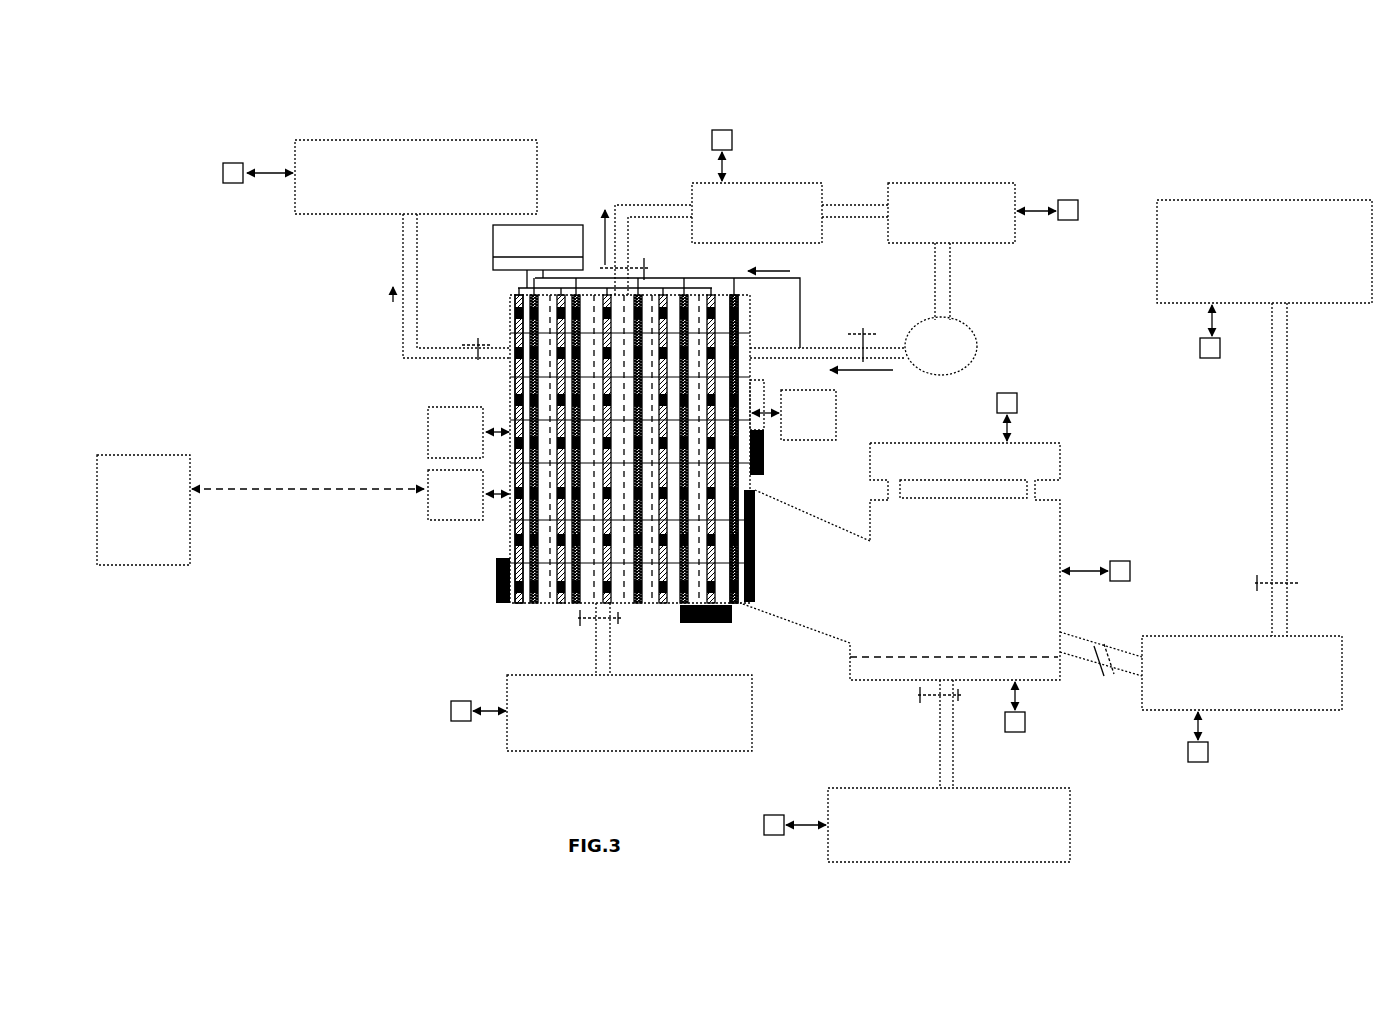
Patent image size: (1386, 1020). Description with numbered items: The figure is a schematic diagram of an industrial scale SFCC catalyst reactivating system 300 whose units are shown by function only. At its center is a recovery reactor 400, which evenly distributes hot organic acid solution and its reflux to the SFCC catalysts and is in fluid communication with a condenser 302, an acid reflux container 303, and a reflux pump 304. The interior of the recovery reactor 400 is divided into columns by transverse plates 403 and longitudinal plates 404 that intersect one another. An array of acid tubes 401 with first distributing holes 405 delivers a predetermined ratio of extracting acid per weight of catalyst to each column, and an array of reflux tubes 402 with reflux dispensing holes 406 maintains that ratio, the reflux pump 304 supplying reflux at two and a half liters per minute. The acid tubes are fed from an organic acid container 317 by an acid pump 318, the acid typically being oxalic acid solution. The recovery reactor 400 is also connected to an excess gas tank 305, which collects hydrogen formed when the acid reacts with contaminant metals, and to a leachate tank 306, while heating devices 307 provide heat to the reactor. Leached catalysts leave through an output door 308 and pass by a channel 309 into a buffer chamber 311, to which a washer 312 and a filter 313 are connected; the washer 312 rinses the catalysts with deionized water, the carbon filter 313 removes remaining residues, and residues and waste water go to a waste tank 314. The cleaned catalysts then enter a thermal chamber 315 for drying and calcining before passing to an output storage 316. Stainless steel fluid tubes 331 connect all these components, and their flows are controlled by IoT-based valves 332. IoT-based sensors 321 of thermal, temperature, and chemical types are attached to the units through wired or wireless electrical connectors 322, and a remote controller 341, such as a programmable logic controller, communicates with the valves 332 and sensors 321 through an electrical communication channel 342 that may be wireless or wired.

The SFCC catalyst reactivating system 300 is at (1030, 132).
The condenser 302 is at (800, 183).
The acid reflux container 303 is at (953, 183).
The reflux pump 304 is at (977, 340).
The excess gas tank 305 is at (537, 162).
The leachate tank 306 is at (752, 700).
The heating device 307 is at (496, 580).
The output door 308 is at (757, 542).
The channel 309 is at (850, 532).
The buffer chamber 311 is at (1060, 510).
The washer 312 is at (1060, 460).
The filter 313 is at (880, 657).
The waste tank 314 is at (1070, 830).
The thermal chamber 315 is at (1280, 710).
The output storage 316 is at (1245, 200).
The organic acid container 317 is at (553, 254).
The acid pump 318 is at (493, 258).
The sensors 321 is at (233, 185).
The electrical connectors 322 is at (275, 180).
The fluid tubes 331 is at (403, 265).
The IoT-based valve 332 is at (478, 352).
The remote controller 341 is at (140, 455).
The electrical communication channel 342 is at (297, 497).
The recovery reactor 400 is at (510, 300).
The array of acid tubes 401 is at (519, 603).
The array of reflux tubes 402 is at (534, 603).
The transverse plates 403 is at (742, 337).
The longitudinal plates 404 is at (550, 603).
The first distributing holes 405 is at (517, 320).
The reflux dispensing holes 406 is at (752, 392).